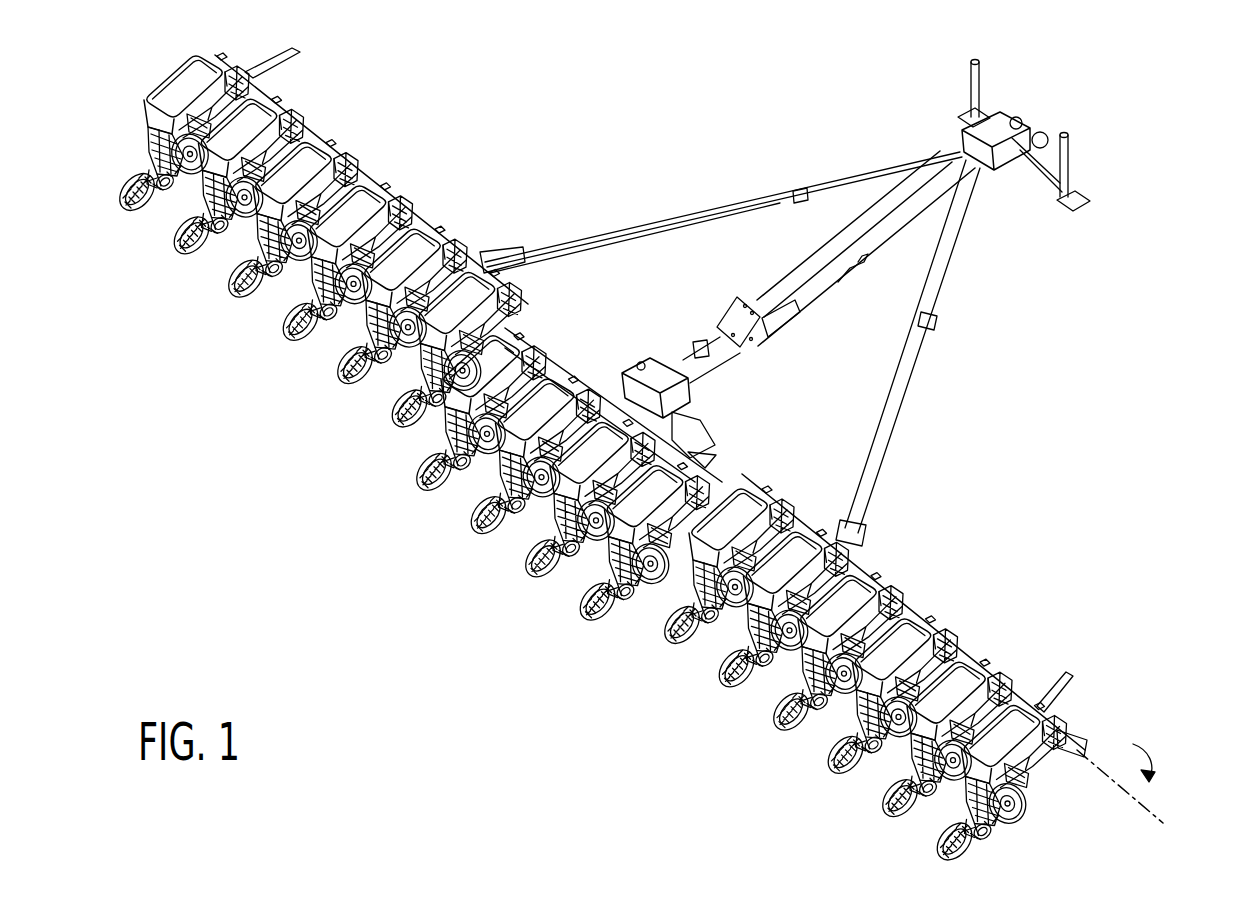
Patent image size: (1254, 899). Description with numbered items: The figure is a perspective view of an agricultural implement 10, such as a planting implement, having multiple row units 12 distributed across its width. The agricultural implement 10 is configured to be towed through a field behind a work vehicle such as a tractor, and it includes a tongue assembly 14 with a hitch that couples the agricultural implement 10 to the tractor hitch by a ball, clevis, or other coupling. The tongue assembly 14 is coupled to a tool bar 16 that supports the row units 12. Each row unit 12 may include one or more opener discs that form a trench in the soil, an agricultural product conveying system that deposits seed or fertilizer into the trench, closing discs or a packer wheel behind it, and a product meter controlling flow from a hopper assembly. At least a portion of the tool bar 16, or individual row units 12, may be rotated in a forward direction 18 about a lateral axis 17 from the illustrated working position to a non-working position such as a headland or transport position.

The agricultural implement 10 is at (785, 116).
The row unit 12 is at (455, 320).
The tongue assembly 14 is at (827, 291).
The tool bar 16 is at (927, 618).
The lateral axis 17 is at (1150, 807).
The forward direction 18 is at (1110, 817).